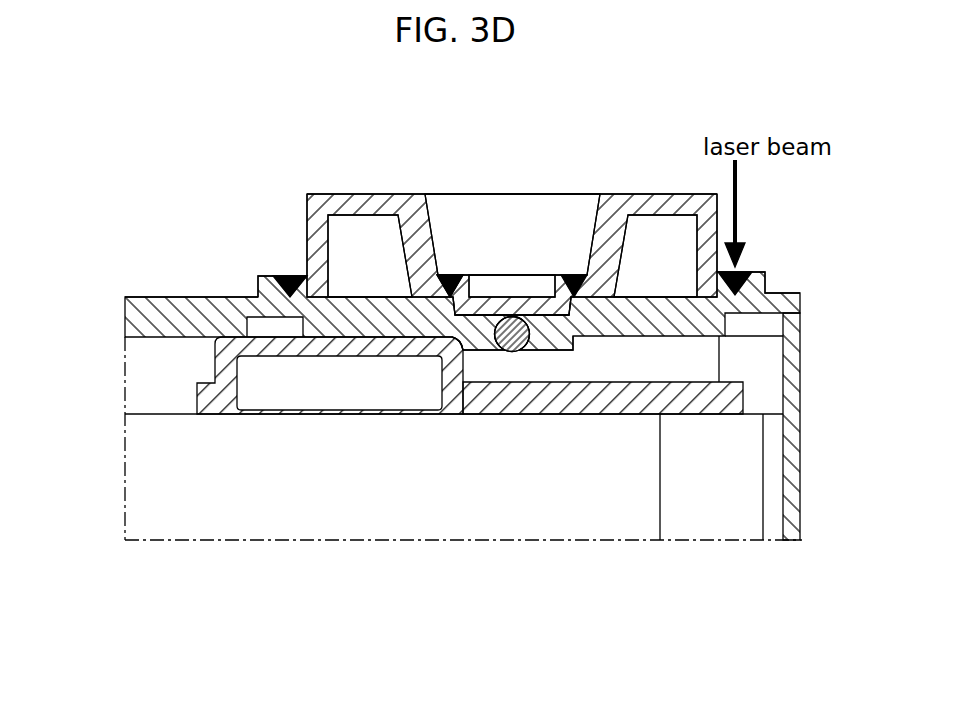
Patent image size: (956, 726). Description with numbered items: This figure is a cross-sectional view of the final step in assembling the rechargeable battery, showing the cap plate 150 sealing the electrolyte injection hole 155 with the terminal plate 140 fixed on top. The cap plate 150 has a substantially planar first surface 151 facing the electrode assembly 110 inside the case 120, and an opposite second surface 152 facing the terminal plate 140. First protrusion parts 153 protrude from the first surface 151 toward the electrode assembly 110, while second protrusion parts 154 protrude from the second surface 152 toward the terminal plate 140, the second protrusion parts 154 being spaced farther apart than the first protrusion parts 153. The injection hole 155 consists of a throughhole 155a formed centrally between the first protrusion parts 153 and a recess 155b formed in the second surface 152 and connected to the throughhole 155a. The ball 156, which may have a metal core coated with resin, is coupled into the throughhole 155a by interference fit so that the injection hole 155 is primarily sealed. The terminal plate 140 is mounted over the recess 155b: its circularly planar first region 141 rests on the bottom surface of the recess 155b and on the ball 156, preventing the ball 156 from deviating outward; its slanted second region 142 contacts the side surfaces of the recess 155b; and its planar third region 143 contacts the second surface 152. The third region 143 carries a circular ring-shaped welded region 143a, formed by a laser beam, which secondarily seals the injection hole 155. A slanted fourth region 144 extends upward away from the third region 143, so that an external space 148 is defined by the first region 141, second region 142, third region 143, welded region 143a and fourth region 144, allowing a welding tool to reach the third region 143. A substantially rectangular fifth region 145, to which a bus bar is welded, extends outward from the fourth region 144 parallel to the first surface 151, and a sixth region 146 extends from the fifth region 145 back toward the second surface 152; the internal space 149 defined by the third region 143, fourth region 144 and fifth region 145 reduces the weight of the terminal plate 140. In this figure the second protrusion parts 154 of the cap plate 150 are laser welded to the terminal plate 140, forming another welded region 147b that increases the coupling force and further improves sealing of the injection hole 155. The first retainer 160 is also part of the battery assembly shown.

The electrode assembly 110 is at (226, 552).
The case 120 is at (790, 541).
The terminal plate 140 is at (650, 180).
The first region 141 is at (518, 302).
The second region 142 is at (478, 272).
The third region 143 is at (460, 272).
The welded region 143a is at (439, 272).
The fourth region 144 is at (599, 217).
The fifth region 145 is at (333, 193).
The sixth region 146 is at (306, 223).
The welded region 147b is at (288, 273).
The external space 148 is at (539, 230).
The internal space 149 is at (362, 232).
The cap plate 150 is at (137, 318).
The first surface 151 is at (142, 340).
The second surface 152 is at (142, 297).
The first protrusion parts 153 is at (478, 340).
The second protrusion parts 154 is at (259, 277).
The injection hole 155 is at (530, 618).
The throughhole 155a is at (508, 352).
The recess 155b is at (515, 352).
The ball 156 is at (548, 353).
The first retainer 160 is at (637, 415).